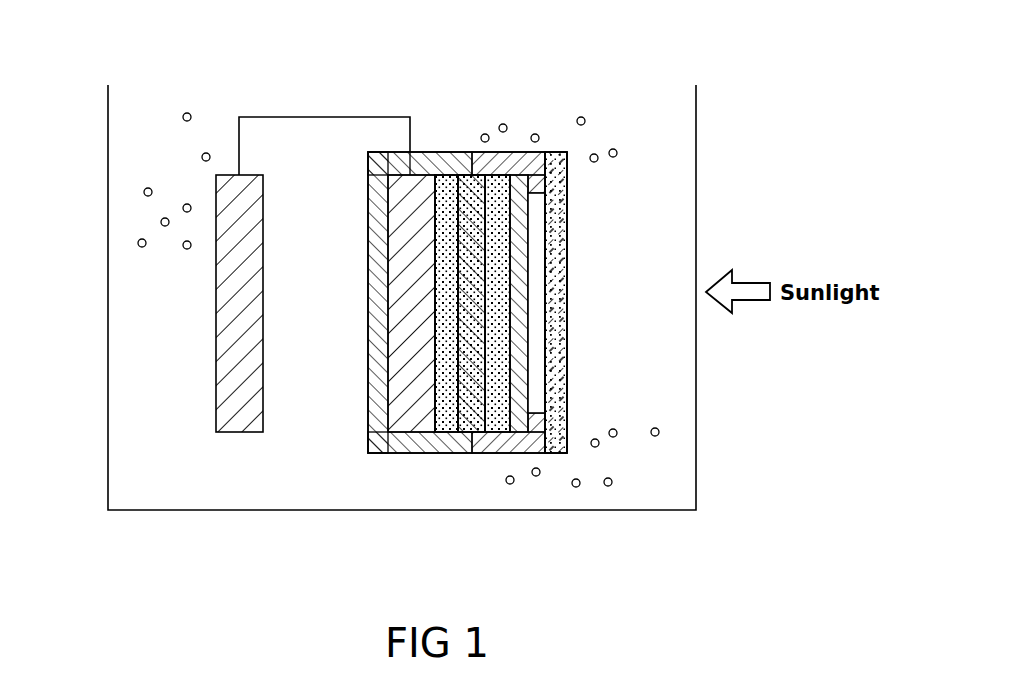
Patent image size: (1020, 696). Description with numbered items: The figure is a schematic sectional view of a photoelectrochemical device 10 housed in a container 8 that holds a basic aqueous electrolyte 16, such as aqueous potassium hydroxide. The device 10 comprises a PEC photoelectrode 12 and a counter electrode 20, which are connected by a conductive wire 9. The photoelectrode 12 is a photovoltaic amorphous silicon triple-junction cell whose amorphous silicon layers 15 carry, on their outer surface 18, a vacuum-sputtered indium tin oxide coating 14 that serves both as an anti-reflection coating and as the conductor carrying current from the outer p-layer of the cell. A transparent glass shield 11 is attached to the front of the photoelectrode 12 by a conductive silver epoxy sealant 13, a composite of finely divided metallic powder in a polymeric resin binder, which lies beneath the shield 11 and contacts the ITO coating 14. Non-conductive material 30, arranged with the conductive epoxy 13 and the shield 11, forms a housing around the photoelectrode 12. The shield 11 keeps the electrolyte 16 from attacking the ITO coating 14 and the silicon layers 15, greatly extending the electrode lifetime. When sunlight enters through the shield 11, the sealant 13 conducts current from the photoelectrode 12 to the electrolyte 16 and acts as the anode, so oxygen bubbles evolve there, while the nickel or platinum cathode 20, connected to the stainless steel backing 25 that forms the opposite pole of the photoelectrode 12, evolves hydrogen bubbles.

The container 8 is at (108, 288).
The conductive wire 9 is at (313, 117).
The photoelectrochemical device 10 is at (750, 55).
The glass shield 11 is at (567, 152).
The PEC photoelectrode 12 is at (553, 474).
The conductive silver epoxy sealant 13 is at (478, 152).
The ITO surface coating 14 is at (532, 237).
The amorphous silicon layers 15 is at (497, 432).
The basic electrolyte 16 is at (332, 324).
The outer surface 18 is at (510, 185).
The counter electrode 20 is at (216, 352).
The stainless steel backing 25 is at (408, 432).
The non-conductive material 30 is at (368, 440).